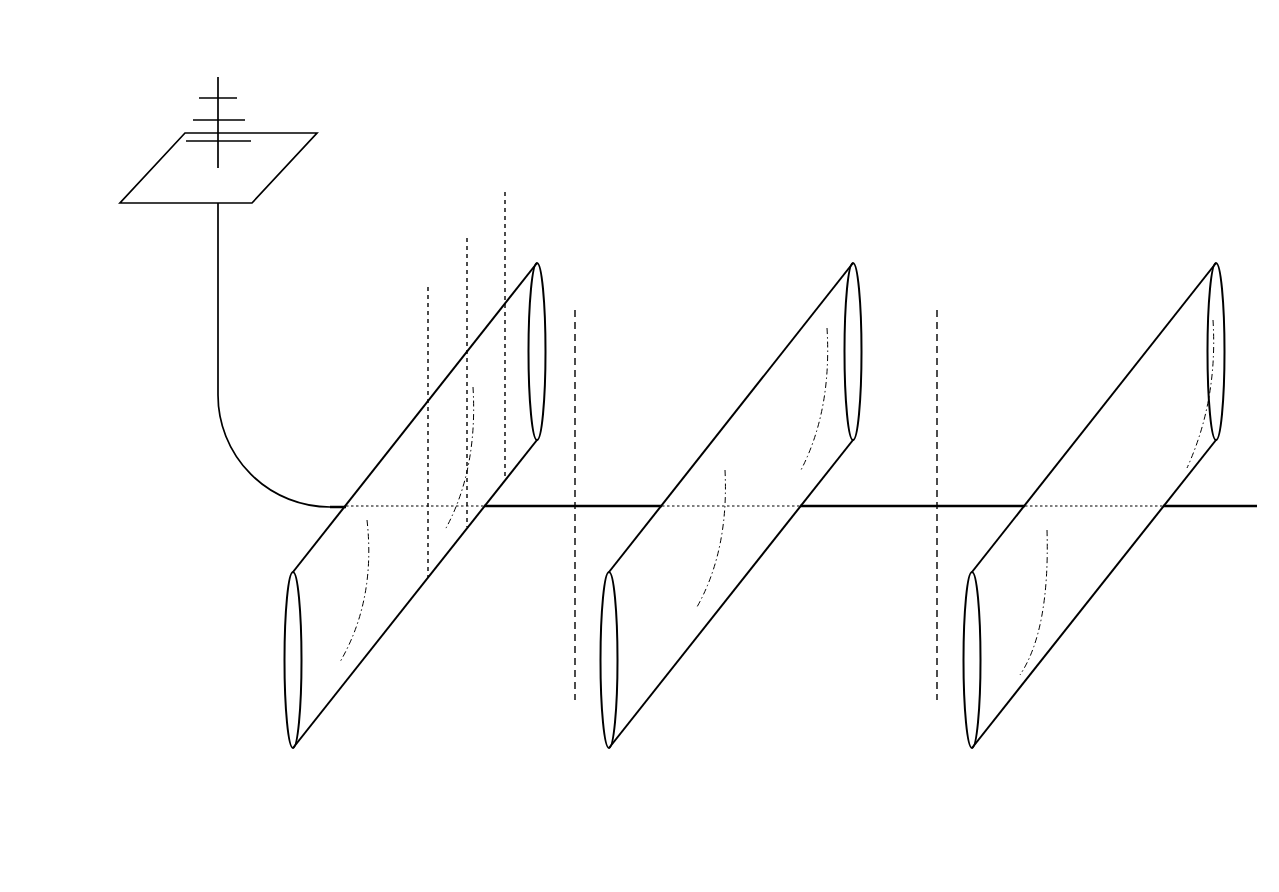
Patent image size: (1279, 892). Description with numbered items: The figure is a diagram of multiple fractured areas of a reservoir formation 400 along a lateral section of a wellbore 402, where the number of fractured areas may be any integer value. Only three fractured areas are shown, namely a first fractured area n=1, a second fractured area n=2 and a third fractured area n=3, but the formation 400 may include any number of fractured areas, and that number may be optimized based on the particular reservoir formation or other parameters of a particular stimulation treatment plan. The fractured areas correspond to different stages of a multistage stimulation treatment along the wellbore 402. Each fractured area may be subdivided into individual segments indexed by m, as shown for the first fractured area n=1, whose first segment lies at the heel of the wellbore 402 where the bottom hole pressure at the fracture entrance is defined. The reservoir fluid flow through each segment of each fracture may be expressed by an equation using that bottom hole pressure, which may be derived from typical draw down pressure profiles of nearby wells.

The reservoir formation 400 is at (1150, 152).
The wellbore 402 is at (206, 358).
The panel n= 1 is at (415, 505).
The panel n= 2 is at (731, 505).
The panel n= 3 is at (1094, 505).